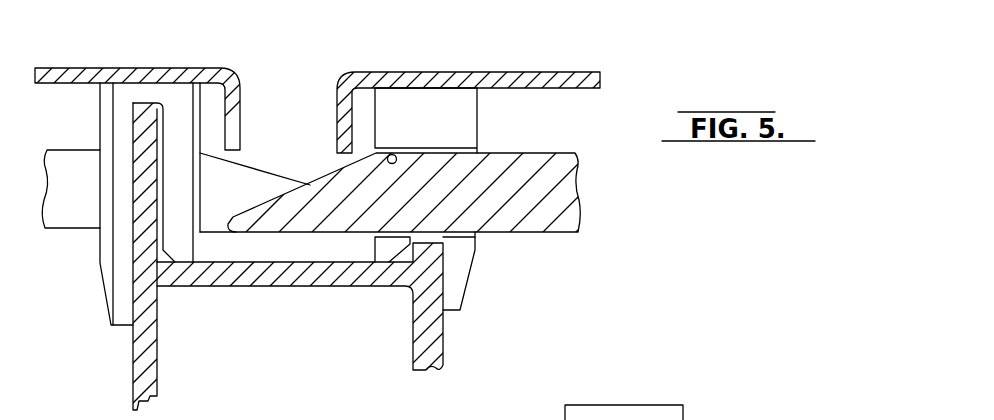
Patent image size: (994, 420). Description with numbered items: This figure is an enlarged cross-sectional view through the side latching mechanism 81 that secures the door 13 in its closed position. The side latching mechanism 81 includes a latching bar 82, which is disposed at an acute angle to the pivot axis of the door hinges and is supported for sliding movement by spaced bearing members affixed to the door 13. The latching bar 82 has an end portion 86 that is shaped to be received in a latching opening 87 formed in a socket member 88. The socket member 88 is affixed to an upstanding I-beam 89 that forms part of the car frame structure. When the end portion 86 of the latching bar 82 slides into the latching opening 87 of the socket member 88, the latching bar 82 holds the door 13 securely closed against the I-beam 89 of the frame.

The door 13 is at (113, 64).
The side latching mechanism 81 is at (584, 219).
The latching bar 82 is at (560, 152).
The end portion 86 is at (304, 186).
The latching opening 87 is at (396, 154).
The socket member 88 is at (458, 128).
The I-beam 89 is at (303, 283).